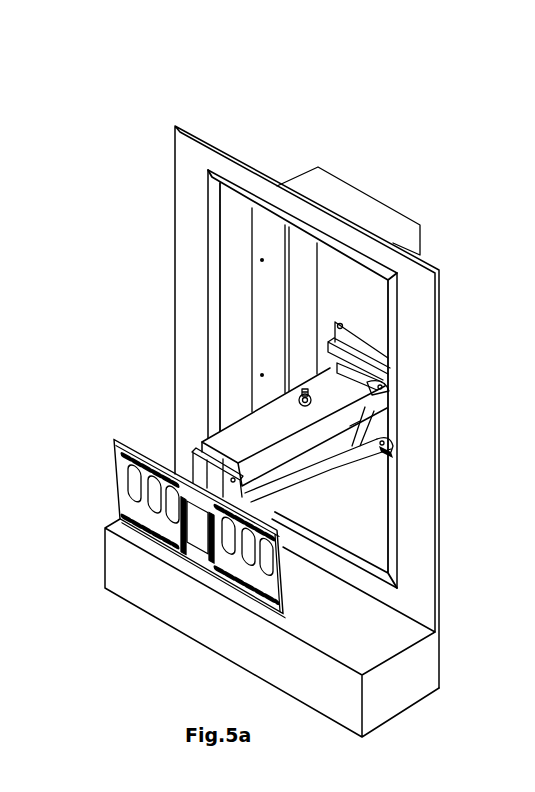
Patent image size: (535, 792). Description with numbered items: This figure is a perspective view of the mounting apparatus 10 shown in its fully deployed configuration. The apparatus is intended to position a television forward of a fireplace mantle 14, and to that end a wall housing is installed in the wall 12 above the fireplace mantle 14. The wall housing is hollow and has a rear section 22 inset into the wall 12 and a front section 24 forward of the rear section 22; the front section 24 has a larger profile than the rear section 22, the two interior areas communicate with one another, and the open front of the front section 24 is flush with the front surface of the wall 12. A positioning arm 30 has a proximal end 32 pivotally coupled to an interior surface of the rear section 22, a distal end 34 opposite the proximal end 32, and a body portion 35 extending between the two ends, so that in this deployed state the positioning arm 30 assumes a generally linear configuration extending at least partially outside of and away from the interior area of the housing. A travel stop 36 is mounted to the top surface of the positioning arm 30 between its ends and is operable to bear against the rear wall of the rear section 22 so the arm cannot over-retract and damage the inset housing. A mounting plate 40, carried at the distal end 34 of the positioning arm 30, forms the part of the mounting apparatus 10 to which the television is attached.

The mounting apparatus 10 is at (252, 86).
The wall 12 is at (413, 572).
The fireplace mantle 14 is at (392, 702).
The rear section 22 is at (377, 217).
The front section 24 is at (392, 295).
The positioning arm 30 is at (300, 443).
The proximal end 32 is at (363, 362).
The distal end 34 is at (213, 447).
The body portion 35 is at (268, 418).
The travel stop 36 is at (309, 396).
The mounting plate 40 is at (120, 517).